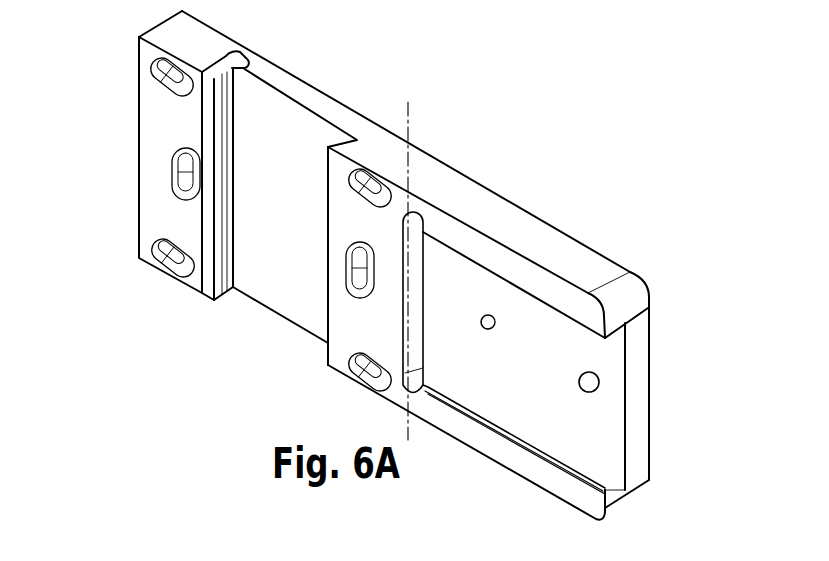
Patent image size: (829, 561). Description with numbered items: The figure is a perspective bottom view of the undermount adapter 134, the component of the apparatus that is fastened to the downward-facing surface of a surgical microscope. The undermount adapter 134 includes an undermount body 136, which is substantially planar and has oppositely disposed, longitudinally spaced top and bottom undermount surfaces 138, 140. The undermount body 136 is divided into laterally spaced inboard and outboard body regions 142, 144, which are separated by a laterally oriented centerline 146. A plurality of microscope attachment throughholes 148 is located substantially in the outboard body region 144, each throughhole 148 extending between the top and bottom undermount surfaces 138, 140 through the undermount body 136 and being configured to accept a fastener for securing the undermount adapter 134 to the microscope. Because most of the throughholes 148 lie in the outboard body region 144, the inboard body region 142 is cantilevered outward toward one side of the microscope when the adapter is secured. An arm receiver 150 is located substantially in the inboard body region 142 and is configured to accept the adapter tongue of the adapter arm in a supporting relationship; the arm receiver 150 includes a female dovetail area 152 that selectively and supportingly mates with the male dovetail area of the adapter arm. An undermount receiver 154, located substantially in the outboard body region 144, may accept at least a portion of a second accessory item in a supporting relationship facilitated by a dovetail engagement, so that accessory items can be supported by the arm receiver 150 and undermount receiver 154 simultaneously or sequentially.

The undermount adapter 134 is at (270, 385).
The undermount body 136 is at (420, 175).
The top undermount surface 138 is at (532, 209).
The bottom undermount surface 140 is at (540, 467).
The inboard body region 142 is at (447, 476).
The outboard body region 144 is at (176, 299).
The centerline 146 is at (411, 131).
The microscope attachment throughholes 148 is at (168, 70).
The arm receiver 150 is at (577, 413).
The female dovetail area 152 is at (646, 334).
The undermount receiver 154 is at (307, 221).